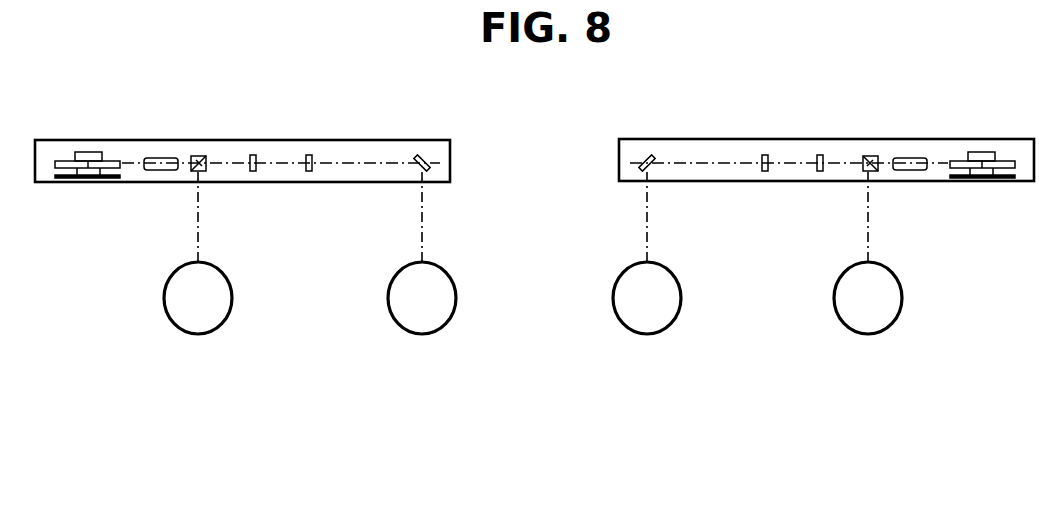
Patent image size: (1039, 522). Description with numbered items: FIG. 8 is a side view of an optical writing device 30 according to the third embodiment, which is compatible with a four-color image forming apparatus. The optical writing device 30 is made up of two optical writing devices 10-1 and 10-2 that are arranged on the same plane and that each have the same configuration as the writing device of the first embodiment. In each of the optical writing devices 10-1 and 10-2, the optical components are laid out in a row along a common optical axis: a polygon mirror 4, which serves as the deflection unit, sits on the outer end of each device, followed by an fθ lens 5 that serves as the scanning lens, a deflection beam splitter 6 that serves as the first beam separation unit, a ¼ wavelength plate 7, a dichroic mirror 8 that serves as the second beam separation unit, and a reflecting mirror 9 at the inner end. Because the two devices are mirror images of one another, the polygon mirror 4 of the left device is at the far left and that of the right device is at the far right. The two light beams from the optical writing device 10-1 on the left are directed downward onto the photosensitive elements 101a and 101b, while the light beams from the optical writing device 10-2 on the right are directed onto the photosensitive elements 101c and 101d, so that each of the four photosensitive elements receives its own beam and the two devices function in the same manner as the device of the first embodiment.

The polygon mirror 4 is at (59, 160).
The fθ lens 5 is at (155, 158).
The deflection beam splitter 6 is at (196, 156).
The ¼ wavelength plate 7 is at (252, 155).
The dichroic mirror 8 is at (308, 155).
The reflecting mirror 9 is at (427, 156).
The optical writing device 10-1 is at (279, 110).
The optical writing device 10-2 is at (841, 110).
The optical writing device 30 is at (352, 93).
The photosensitive element 101a is at (455, 302).
The photosensitive element 101b is at (231, 302).
The photosensitive element 101c is at (901, 302).
The photosensitive element 101d is at (680, 302).